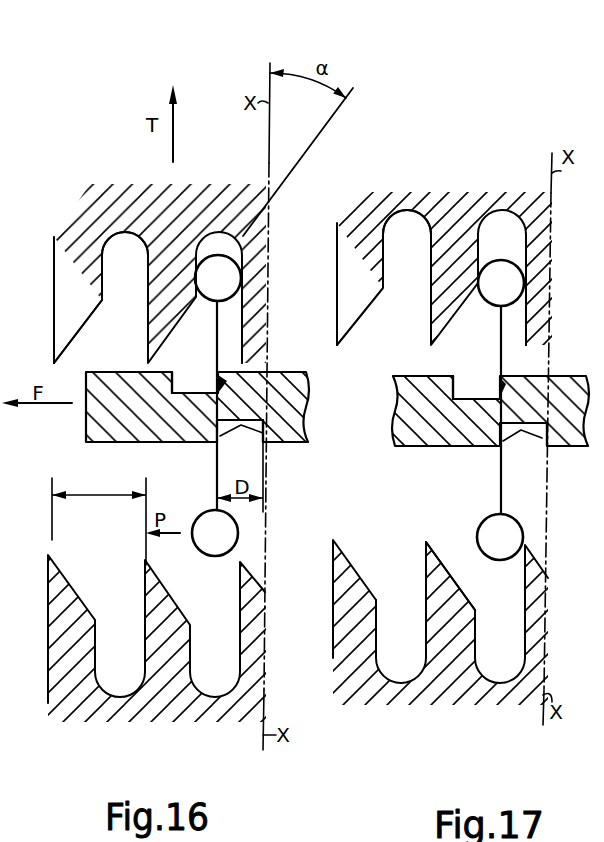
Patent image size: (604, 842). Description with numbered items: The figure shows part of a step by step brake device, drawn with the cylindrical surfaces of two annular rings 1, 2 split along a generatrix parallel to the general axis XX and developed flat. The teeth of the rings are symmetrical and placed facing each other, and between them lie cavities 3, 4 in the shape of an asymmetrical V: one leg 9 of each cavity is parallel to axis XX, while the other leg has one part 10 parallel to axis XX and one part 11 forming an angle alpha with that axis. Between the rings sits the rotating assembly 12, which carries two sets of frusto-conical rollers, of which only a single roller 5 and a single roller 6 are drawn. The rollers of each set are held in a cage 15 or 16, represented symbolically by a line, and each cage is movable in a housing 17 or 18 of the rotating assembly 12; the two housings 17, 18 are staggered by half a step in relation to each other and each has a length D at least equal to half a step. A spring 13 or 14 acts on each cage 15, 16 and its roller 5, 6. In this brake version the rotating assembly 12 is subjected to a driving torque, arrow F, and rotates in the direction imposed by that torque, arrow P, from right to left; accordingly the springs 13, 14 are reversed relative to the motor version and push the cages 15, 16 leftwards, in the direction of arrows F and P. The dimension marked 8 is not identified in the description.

In FIG. 16, the annular ring 1 is at (164, 657).
In FIG. 17, the annular ring 1 is at (445, 627).
In FIG. 16, the annular ring 2 is at (157, 253).
In FIG. 17, the annular ring 2 is at (453, 240).
In FIG. 16, the cavity 3 is at (121, 698).
In FIG. 17, the cavity 3 is at (398, 673).
In FIG. 16, the cavity 4 is at (112, 236).
In FIG. 17, the cavity 4 is at (398, 228).
In FIG. 16, the frusto-conical roller 5 is at (215, 533).
In FIG. 17, the frusto-conical roller 5 is at (500, 537).
In FIG. 16, the frusto-conical roller 6 is at (218, 278).
In FIG. 17, the frusto-conical roller 6 is at (501, 283).
In FIG. 16, the pitch distance 8 is at (99, 518).
In FIG. 16, the leg of cavity 9 is at (148, 293).
In FIG. 17, the leg of cavity 9 is at (520, 241).
In FIG. 16, the part of leg 10 is at (102, 257).
In FIG. 17, the part of leg 10 is at (484, 260).
In FIG. 16, the part of leg 11 is at (172, 347).
In FIG. 17, the part of leg 11 is at (438, 557).
In FIG. 16, the rotating assembly 12 is at (105, 416).
In FIG. 17, the rotating assembly 12 is at (403, 385).
In FIG. 16, the spring 13 is at (258, 440).
In FIG. 17, the spring 13 is at (503, 440).
In FIG. 16, the spring 14 is at (222, 372).
In FIG. 17, the spring 14 is at (503, 387).
In FIG. 16, the cage 15 is at (216, 478).
In FIG. 17, the cage 15 is at (498, 463).
In FIG. 16, the cage 16 is at (236, 336).
In FIG. 17, the cage 16 is at (500, 324).
In FIG. 16, the housing 17 is at (225, 428).
In FIG. 17, the housing 17 is at (540, 430).
In FIG. 16, the housing 18 is at (197, 388).
In FIG. 17, the housing 18 is at (473, 393).